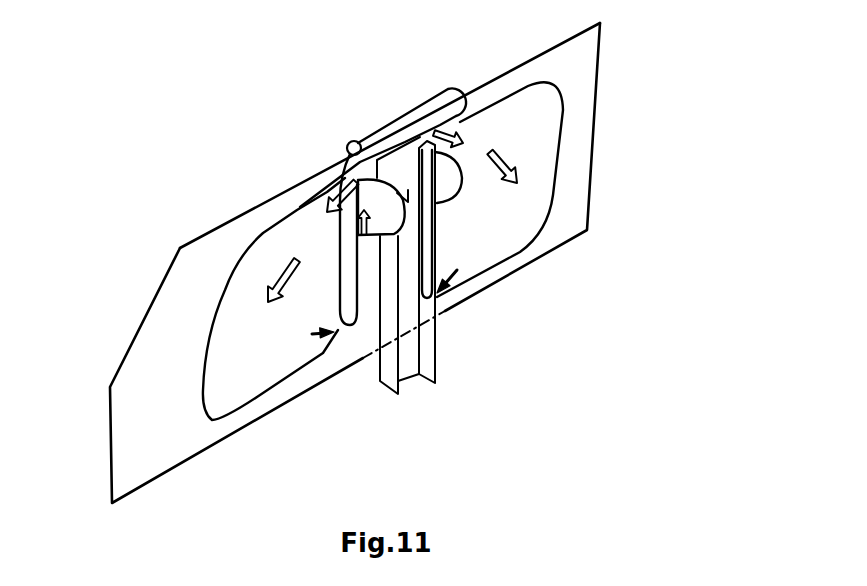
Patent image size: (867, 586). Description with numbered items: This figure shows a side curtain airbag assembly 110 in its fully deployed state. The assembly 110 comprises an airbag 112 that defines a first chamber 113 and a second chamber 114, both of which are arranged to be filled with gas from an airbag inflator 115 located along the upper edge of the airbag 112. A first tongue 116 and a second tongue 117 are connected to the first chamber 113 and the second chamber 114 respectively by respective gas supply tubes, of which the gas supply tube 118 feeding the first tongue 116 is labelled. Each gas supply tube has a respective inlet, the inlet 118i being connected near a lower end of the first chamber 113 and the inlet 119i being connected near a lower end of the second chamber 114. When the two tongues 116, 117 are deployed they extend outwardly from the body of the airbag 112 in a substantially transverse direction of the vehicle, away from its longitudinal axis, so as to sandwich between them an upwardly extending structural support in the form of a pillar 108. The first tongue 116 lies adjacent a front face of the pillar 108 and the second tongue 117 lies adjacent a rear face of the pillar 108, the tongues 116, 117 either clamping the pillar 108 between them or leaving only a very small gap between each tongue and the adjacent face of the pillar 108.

The pillar 108 is at (437, 368).
The side curtain airbag assembly 110 is at (181, 236).
The airbag 112 is at (240, 216).
The first chamber 113 is at (290, 216).
The second chamber 114 is at (565, 133).
The airbag inflator 115 is at (383, 123).
The first tongue 116 is at (350, 144).
The second tongue 117 is at (461, 193).
The gas supply tube 118 is at (366, 232).
The inlet 118i is at (318, 333).
The inlet 119i is at (440, 297).